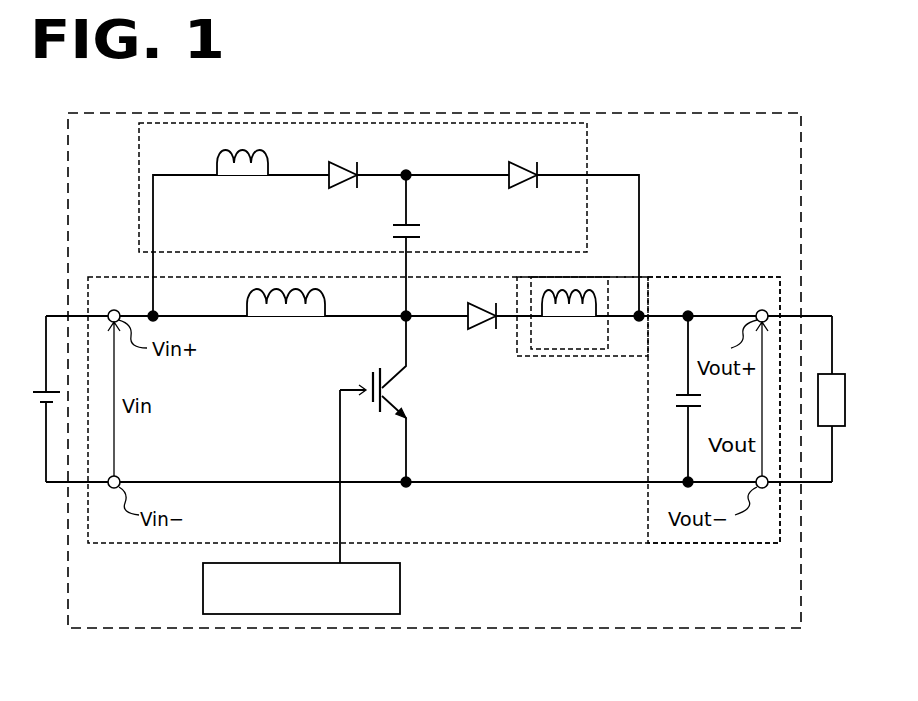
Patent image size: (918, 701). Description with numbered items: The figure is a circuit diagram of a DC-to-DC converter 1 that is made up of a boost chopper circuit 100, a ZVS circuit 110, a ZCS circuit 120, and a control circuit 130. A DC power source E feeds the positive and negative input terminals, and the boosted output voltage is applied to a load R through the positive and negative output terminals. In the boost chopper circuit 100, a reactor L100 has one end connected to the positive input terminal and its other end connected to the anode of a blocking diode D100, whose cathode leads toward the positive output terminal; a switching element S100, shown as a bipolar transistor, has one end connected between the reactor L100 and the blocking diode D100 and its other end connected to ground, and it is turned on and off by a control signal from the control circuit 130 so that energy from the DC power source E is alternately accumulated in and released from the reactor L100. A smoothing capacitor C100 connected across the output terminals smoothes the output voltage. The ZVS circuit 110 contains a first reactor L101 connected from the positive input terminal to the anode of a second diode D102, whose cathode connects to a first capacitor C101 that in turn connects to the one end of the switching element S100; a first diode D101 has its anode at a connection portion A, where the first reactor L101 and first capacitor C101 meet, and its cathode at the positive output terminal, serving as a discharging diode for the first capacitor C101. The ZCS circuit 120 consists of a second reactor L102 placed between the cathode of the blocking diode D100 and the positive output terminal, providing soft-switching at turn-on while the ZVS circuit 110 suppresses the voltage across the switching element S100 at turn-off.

The DC-to-DC converter 1 is at (801, 176).
The boost chopper circuit 100 is at (692, 277).
The ZVS circuit 110 is at (588, 134).
The ZCS circuit 120 is at (596, 277).
The control circuit 130 is at (401, 590).
The DC power source E is at (36, 398).
The load R is at (843, 400).
The connection portion A is at (408, 171).
The reactor L100 is at (286, 317).
The first reactor L101 is at (242, 179).
The second reactor L102 is at (569, 318).
The blocking diode D100 is at (482, 333).
The first diode D101 is at (525, 190).
The second diode D102 is at (345, 190).
The smoothing capacitor C100 is at (658, 401).
The first capacitor C101 is at (435, 236).
The switching element S100 is at (408, 393).